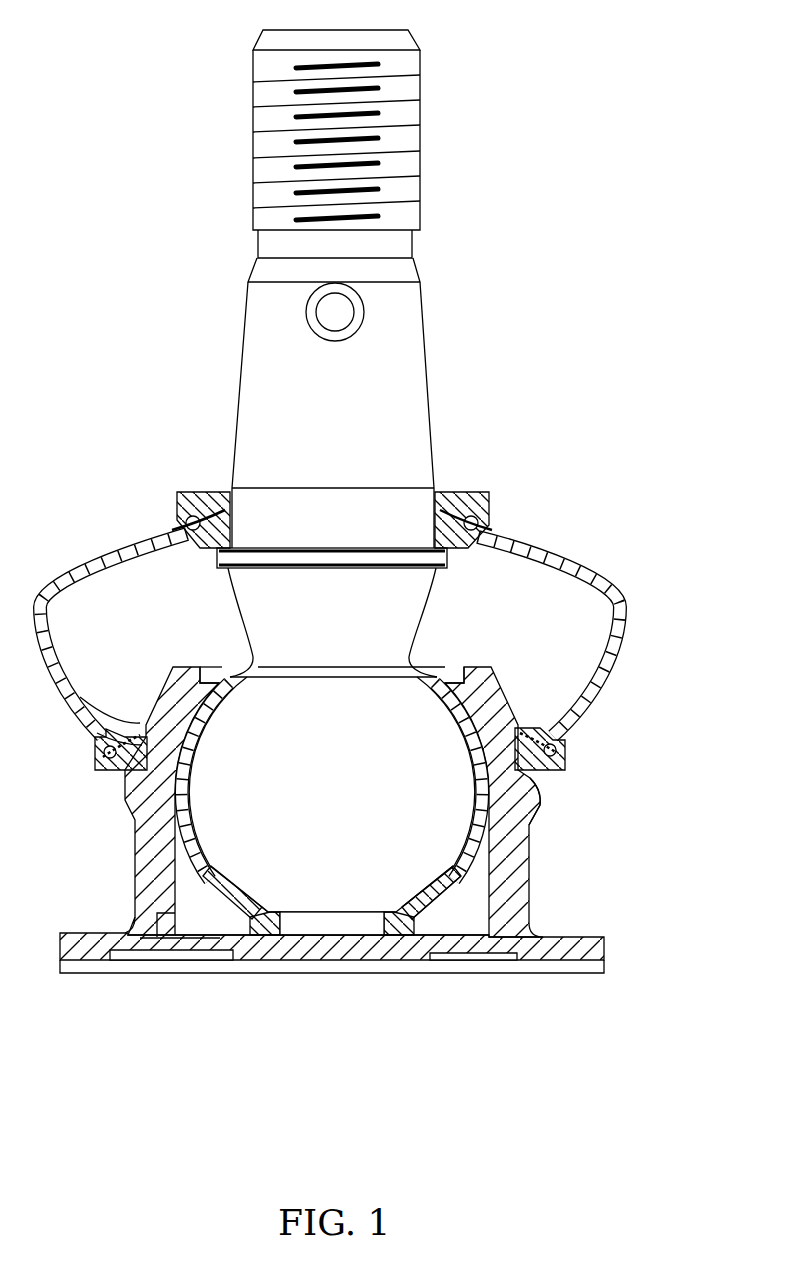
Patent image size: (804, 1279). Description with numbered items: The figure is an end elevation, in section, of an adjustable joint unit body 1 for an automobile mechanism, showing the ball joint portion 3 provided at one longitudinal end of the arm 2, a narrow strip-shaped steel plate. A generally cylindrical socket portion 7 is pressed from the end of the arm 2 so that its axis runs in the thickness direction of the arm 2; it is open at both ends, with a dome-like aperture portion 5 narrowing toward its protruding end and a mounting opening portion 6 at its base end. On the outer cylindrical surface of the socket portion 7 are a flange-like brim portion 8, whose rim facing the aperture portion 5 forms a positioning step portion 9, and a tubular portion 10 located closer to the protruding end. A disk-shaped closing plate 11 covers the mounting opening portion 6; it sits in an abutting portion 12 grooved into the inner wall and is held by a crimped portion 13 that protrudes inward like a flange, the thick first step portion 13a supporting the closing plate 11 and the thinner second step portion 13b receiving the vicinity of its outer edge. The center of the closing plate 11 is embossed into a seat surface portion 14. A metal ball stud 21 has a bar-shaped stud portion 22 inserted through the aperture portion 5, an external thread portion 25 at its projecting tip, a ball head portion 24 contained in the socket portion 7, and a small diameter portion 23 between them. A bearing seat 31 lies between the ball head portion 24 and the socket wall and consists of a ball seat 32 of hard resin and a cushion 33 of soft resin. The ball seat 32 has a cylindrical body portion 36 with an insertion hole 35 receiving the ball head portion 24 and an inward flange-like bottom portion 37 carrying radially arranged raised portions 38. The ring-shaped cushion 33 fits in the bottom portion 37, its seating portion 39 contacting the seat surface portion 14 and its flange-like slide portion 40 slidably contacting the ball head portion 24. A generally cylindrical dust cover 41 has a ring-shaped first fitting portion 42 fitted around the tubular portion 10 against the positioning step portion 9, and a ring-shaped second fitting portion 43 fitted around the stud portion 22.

The adjustable joint unit body 1 is at (580, 45).
The arm 2 is at (600, 967).
The ball joint portion 3 is at (560, 462).
The aperture portion 5 is at (453, 687).
The mounting opening portion 6 is at (547, 963).
The socket portion 7 is at (510, 850).
The brim portion 8 is at (522, 788).
The positioning step portion 9 is at (545, 772).
The tubular portion 10 is at (145, 735).
The closing plate 11 is at (310, 953).
The abutting portion 12 is at (155, 923).
The crimped portion 13 is at (232, 1012).
The first step portion 13a is at (128, 950).
The second step portion 13b is at (165, 943).
The seat surface portion 14 is at (416, 925).
The ball stud 21 is at (482, 340).
The stud portion 22 is at (415, 385).
The small diameter portion 23 is at (402, 613).
The ball head portion 24 is at (345, 897).
The external thread portion 25 is at (402, 152).
The bearing seat 31 is at (588, 868).
The ball seat 32 is at (487, 872).
The cushion 33 is at (487, 895).
The insertion hole 35 is at (213, 683).
The cylindrical body portion 36 is at (477, 755).
The bottom portion 37 is at (448, 908).
The raised portions 38 is at (386, 908).
The seating portion 39 is at (280, 912).
The slide portion 40 is at (205, 865).
The dust cover 41 is at (680, 618).
The first fitting portion 42 is at (567, 763).
The second fitting portion 43 is at (478, 507).